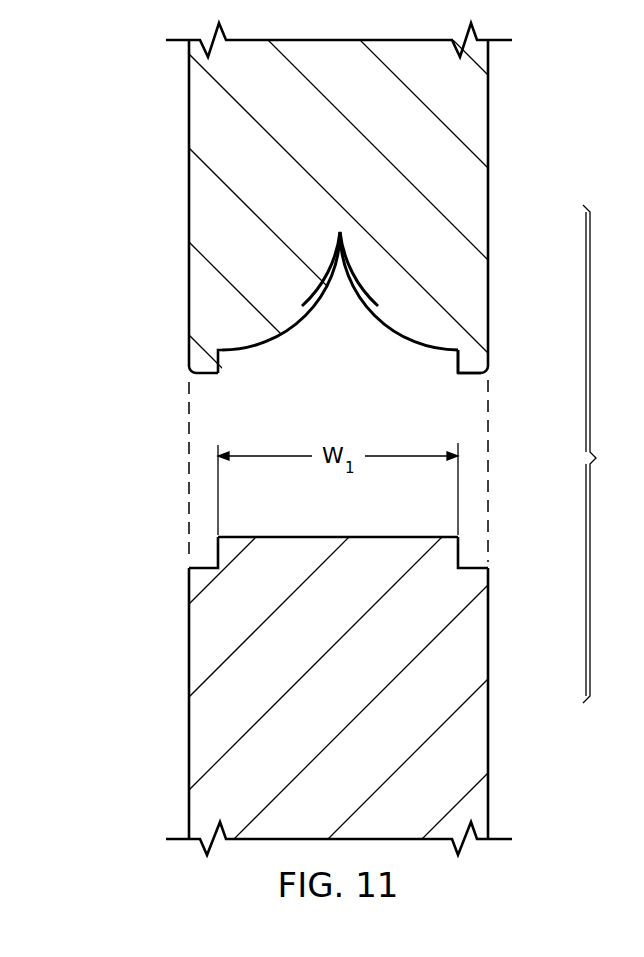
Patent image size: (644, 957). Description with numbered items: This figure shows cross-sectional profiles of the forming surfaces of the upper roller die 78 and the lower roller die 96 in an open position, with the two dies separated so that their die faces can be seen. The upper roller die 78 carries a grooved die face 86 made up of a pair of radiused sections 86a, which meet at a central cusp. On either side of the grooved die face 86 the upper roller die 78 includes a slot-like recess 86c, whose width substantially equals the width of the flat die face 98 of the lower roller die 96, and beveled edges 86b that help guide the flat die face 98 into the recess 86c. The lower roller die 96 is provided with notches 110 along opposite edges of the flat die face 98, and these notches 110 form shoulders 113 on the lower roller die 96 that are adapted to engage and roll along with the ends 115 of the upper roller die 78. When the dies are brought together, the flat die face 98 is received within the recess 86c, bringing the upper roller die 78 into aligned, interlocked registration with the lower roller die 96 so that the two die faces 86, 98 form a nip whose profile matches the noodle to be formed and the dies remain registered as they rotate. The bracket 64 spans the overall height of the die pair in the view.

The upper roller die 78 is at (489, 306).
The grooved die face 86 is at (389, 349).
The radiused sections 86a is at (366, 316).
The beveled edges 86b is at (220, 381).
The slot-like recess 86c is at (226, 368).
The ends of the upper roller die 115 is at (198, 379).
The lower roller die 96 is at (189, 648).
The flat die face 98 is at (287, 532).
The notches 110 is at (210, 554).
The shoulders 113 is at (470, 562).
The assembly 64 is at (607, 454).